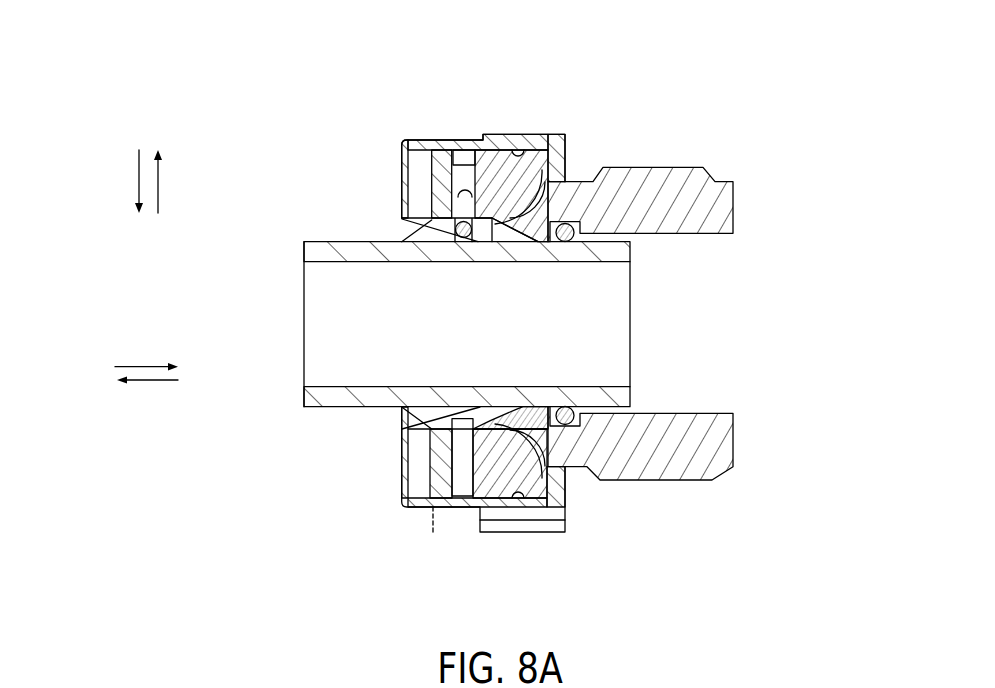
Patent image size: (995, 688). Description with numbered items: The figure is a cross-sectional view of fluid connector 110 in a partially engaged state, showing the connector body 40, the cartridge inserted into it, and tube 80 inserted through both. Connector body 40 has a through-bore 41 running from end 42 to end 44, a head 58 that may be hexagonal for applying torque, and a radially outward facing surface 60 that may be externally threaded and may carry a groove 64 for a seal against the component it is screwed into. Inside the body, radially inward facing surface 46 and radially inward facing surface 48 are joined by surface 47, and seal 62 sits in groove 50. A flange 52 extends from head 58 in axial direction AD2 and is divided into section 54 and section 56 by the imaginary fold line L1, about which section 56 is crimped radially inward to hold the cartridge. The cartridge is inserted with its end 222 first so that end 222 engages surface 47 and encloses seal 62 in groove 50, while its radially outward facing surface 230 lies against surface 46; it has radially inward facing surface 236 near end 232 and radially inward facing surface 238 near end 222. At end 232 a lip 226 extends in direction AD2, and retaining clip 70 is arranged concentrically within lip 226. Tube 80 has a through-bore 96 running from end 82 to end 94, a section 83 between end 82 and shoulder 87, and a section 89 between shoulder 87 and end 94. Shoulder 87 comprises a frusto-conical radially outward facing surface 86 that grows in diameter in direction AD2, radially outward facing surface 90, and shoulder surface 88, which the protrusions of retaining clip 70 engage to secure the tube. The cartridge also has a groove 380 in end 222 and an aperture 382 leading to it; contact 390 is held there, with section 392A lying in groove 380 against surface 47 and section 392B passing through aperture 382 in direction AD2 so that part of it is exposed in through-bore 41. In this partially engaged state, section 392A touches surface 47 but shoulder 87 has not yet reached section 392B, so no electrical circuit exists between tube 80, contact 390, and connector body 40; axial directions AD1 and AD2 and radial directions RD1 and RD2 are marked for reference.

The fluid connector 110 is at (226, 76).
The connector body 40 is at (702, 208).
The through-bore 41 is at (726, 329).
The end 42 is at (733, 420).
The end 44 is at (394, 140).
The radially inward facing surface 46 is at (486, 140).
The surface 47 is at (540, 150).
The radially inward facing surface 48 is at (688, 420).
The groove 50 is at (594, 168).
The flange 52 is at (443, 508).
The section 54 is at (461, 132).
The section 56 is at (410, 130).
The head 58 is at (556, 150).
The radially outward facing surface 60 is at (678, 163).
The seal 62 is at (568, 242).
The groove 64 is at (569, 180).
The retaining clip 70 is at (468, 236).
The tube 80 is at (325, 243).
The end 82 is at (620, 246).
The section 83 is at (604, 428).
The radially outward facing surface 86 is at (424, 221).
The shoulder 87 is at (424, 420).
The shoulder surface 88 is at (406, 220).
The section 89 is at (319, 430).
The radially outward facing surface 90 is at (308, 243).
The end 94 is at (303, 397).
The through-bore 96 is at (338, 315).
The end 222 is at (526, 223).
The lip 226 is at (433, 140).
The radially outward facing surface 230 is at (524, 148).
The end 232 is at (473, 165).
The radially inward facing surface 236 is at (466, 200).
The radially inward facing surface 238 is at (582, 160).
The groove 380 is at (513, 440).
The aperture 382 is at (497, 445).
The contact 390 is at (515, 428).
The section 392A is at (553, 470).
The section 392B is at (488, 428).
The radial direction RD1 is at (162, 188).
The radial direction RD2 is at (137, 180).
The axial direction AD1 is at (150, 363).
The axial direction AD2 is at (150, 383).
The fold line L1 is at (433, 532).